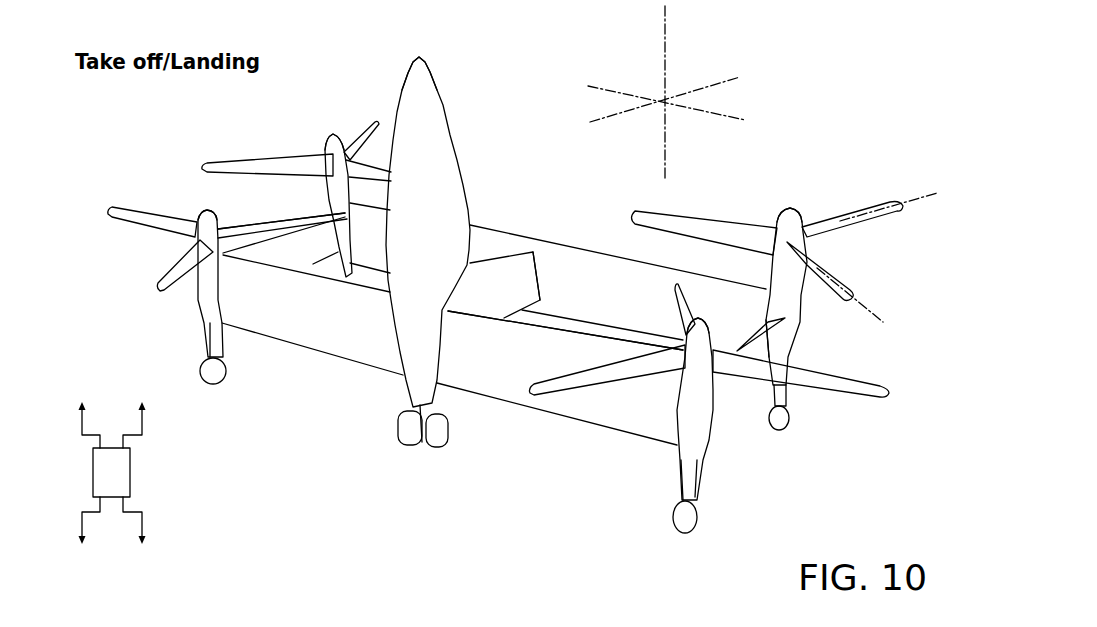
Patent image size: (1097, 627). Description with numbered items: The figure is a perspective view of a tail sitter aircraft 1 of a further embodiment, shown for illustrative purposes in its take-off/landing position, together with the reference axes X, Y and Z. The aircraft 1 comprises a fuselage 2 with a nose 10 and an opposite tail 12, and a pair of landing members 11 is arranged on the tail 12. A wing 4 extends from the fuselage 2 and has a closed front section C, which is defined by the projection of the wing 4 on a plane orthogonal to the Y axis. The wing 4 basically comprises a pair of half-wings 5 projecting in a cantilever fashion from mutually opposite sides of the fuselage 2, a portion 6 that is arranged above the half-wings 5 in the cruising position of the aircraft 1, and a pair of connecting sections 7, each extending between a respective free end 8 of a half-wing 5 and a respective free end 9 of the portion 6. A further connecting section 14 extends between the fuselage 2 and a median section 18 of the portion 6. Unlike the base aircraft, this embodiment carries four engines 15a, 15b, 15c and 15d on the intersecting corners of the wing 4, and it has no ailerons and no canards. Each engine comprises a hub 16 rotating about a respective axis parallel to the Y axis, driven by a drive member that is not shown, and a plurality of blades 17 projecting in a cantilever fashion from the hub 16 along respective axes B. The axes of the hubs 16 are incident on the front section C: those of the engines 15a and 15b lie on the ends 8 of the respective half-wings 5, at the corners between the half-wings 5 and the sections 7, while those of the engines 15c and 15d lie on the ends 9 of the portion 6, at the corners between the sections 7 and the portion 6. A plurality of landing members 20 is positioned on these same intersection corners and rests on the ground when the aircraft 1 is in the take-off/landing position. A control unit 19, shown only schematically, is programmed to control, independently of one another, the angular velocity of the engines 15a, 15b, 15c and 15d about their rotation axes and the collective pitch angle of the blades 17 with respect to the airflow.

The aircraft 1 is at (820, 62).
The fuselage 2 is at (449, 156).
The wing 4 is at (527, 195).
The half-wings 5 is at (323, 344).
The portion 6 is at (590, 290).
The connecting sections 7 is at (283, 252).
The free ends of the half-wings 8 is at (203, 318).
The free ends of portion 9 is at (325, 222).
The nose 10 is at (411, 73).
The landing members 11 is at (428, 442).
The tail 12 is at (417, 391).
The further connecting section 14 is at (493, 277).
The engine 15a is at (124, 280).
The engine 15b is at (752, 460).
The engine 15c is at (327, 113).
The engine 15d is at (834, 162).
The hub 16 is at (200, 212).
The blades 17 is at (837, 230).
The median section 18 is at (540, 260).
The control unit 19 is at (103, 486).
The landing members 20 is at (217, 383).
The axes of the blades B is at (915, 200).
The front section C is at (619, 244).
The X-axis X is at (600, 86).
The Y-axis Y is at (667, 20).
The Z-axis Z is at (733, 78).